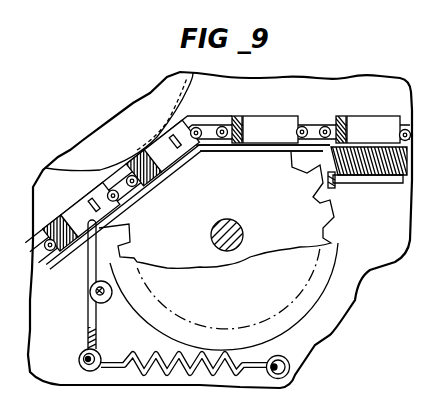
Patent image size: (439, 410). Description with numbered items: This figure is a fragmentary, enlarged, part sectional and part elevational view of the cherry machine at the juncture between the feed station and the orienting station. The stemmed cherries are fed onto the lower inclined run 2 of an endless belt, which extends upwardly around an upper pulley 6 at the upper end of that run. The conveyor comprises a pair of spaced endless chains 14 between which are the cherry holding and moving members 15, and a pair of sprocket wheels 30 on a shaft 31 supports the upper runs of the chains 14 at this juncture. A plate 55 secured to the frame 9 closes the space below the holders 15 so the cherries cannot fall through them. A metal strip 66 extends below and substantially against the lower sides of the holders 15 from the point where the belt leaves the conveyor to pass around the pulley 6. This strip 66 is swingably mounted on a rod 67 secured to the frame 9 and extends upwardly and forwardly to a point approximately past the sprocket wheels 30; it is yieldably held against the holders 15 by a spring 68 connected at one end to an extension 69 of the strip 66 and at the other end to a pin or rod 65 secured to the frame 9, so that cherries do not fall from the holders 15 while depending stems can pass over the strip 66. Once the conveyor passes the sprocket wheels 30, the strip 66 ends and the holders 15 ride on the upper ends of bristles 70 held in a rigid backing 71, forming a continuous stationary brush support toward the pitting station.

The lower inclined run 2 is at (83, 203).
The upper pulley 6 is at (170, 102).
The frame 9 is at (40, 370).
The endless chains 14 is at (310, 125).
The cherry holding and moving members 15 is at (263, 117).
The sprocket wheels 30 is at (186, 221).
The shaft 31 is at (240, 227).
The plate 55 is at (85, 250).
The pin or rod 65 is at (289, 367).
The metal strip 66 is at (220, 150).
The rod 67 is at (110, 297).
The spring 68 is at (157, 349).
The extension 69 is at (83, 325).
The bristles 70 is at (373, 170).
The rigid backing 71 is at (395, 187).